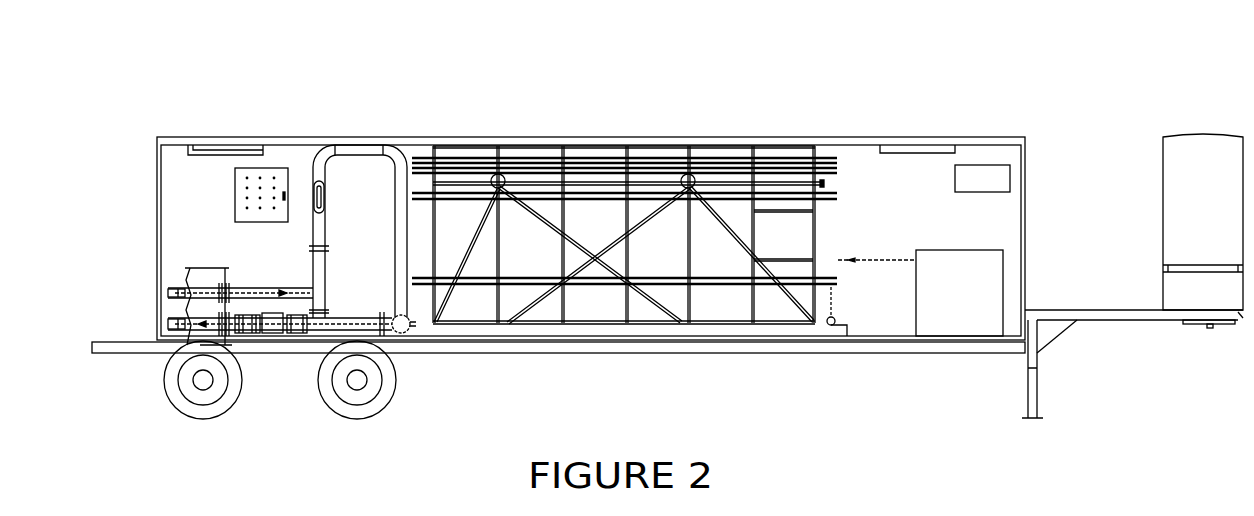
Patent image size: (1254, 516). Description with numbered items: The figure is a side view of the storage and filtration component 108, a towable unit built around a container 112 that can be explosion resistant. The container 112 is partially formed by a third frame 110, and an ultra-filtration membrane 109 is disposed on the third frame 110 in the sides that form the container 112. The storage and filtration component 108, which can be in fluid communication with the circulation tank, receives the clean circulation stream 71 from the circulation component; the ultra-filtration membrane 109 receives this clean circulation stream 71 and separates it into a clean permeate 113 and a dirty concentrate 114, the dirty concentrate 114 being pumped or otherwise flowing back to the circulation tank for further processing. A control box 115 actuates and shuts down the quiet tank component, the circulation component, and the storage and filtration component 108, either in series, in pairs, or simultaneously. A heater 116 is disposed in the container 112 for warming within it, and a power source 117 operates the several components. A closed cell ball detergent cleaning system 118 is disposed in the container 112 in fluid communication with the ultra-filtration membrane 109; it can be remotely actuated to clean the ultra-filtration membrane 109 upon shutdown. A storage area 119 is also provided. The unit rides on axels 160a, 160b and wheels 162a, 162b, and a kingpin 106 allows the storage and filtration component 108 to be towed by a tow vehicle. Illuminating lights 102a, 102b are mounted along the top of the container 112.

The storage and filtration component 108 is at (145, 101).
The illuminating light 102a is at (263, 148).
The illuminating light 102b is at (955, 148).
The control box 115 is at (235, 200).
The storage area 119 is at (358, 170).
The clean circulation stream 71 is at (247, 288).
The ultra-filtration membrane 109 is at (840, 172).
The heater 116 is at (955, 183).
The container 112 is at (1025, 221).
The power source 117 is at (1163, 198).
The closed cell ball detergent cleaning system 118 is at (1003, 292).
The clean permeate 113 is at (838, 286).
The dirty concentrate 114 is at (328, 325).
The third frame 110 is at (939, 348).
The kingpin 106 is at (1210, 327).
The wheel 162a is at (177, 398).
The axel 160a is at (208, 388).
The wheel 162b is at (331, 398).
The axel 160b is at (362, 388).